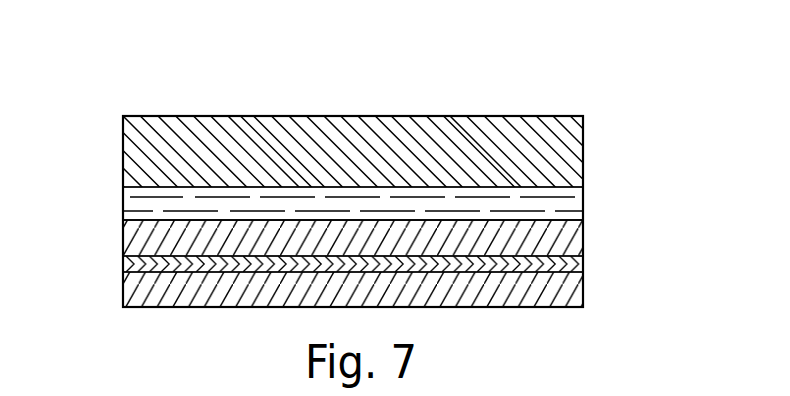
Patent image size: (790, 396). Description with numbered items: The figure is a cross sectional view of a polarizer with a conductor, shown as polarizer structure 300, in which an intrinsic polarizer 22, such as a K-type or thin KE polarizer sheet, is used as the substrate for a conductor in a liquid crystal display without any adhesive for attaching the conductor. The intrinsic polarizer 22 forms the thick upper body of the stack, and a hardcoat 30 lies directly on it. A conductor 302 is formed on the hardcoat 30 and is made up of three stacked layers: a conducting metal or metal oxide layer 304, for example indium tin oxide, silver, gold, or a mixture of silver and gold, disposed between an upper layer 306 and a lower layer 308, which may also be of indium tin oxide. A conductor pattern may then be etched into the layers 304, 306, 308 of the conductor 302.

The intrinsic polarizer 22 is at (583, 152).
The hardcoat 30 is at (583, 205).
The polarizer structure 300 is at (86, 230).
The conductor 302 is at (110, 223).
The conducting metal or metal oxide layer 304 is at (583, 265).
The layer 306 is at (583, 242).
The layer 308 is at (583, 292).